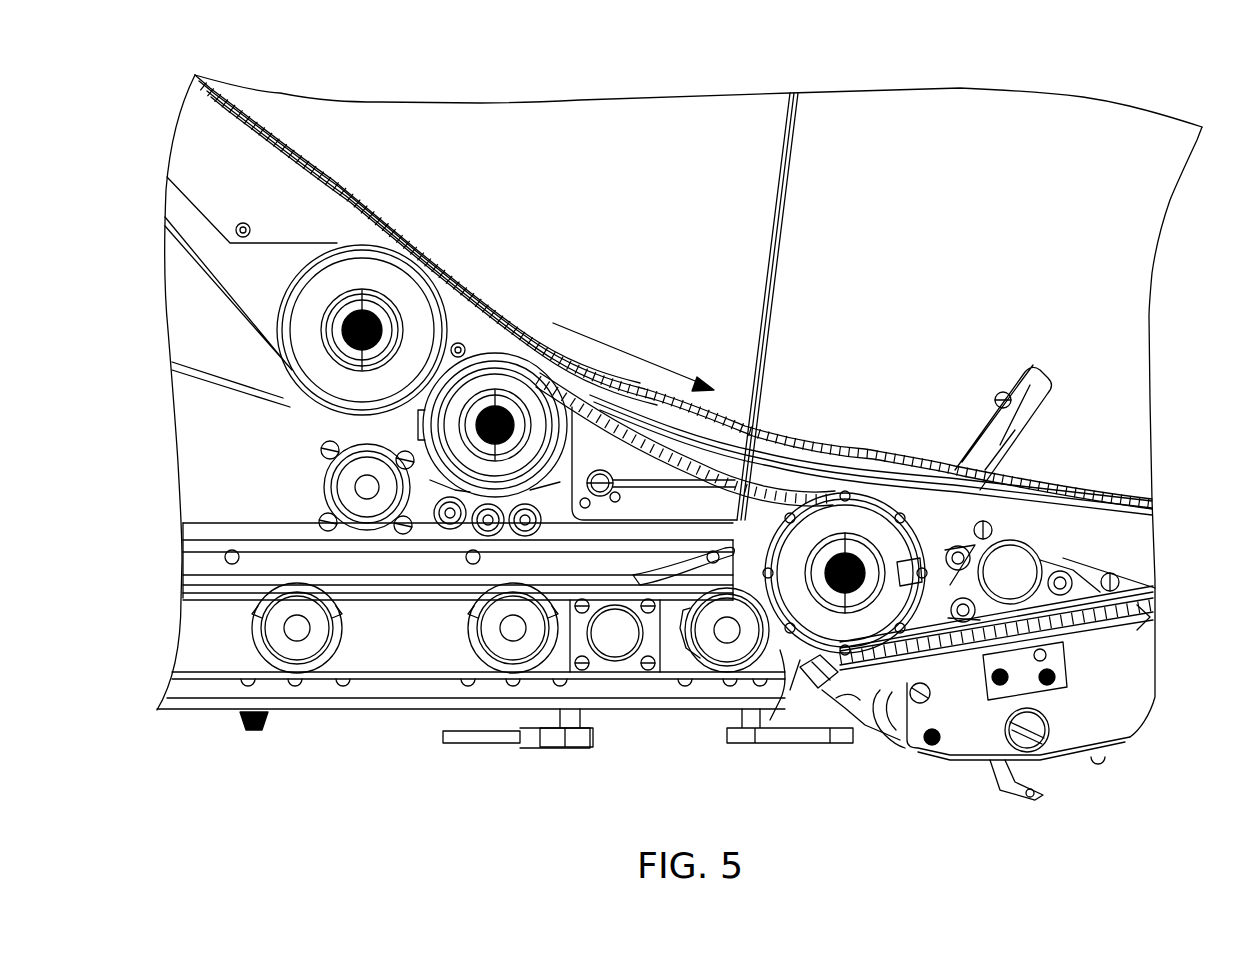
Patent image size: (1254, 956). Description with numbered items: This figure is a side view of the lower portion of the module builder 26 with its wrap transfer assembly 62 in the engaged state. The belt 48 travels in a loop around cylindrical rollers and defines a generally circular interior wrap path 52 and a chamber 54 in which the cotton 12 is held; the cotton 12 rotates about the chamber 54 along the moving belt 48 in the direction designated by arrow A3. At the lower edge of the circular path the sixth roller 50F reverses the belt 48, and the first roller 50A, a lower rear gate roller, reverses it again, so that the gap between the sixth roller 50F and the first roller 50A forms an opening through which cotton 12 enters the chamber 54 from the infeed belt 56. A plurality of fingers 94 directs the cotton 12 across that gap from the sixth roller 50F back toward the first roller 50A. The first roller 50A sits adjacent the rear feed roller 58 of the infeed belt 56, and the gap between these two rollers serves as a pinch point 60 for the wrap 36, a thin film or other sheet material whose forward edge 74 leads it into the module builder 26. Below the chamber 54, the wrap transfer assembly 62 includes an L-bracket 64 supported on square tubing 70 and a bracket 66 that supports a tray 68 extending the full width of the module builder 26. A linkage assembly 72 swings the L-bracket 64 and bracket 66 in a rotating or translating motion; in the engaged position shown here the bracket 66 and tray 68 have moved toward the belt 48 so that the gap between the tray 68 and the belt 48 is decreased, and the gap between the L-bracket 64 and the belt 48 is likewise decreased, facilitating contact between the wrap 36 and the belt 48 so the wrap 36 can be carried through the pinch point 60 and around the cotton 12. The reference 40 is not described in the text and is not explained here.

The cotton 12 is at (773, 440).
The module builder 26 is at (877, 67).
The wrap 36 is at (1160, 593).
The media transport path 40 is at (958, 88).
The belt 48 is at (186, 92).
The first roller 50A is at (862, 513).
The sixth roller 50F is at (403, 283).
The wrap path 52 is at (280, 131).
The chamber 54 is at (593, 122).
The infeed belt 56 is at (193, 578).
The rear feed roller 58 is at (723, 653).
The pinch point 60 is at (798, 640).
The wrap transfer assembly 62 is at (948, 770).
The L-bracket 64 is at (828, 710).
The bracket 66 is at (1130, 685).
The tray 68 is at (1150, 628).
The square tubing 70 is at (810, 697).
The linkage assembly 72 is at (892, 737).
The forward edge 74 is at (633, 575).
The fingers 94 is at (637, 483).
The arrow A3 is at (640, 349).